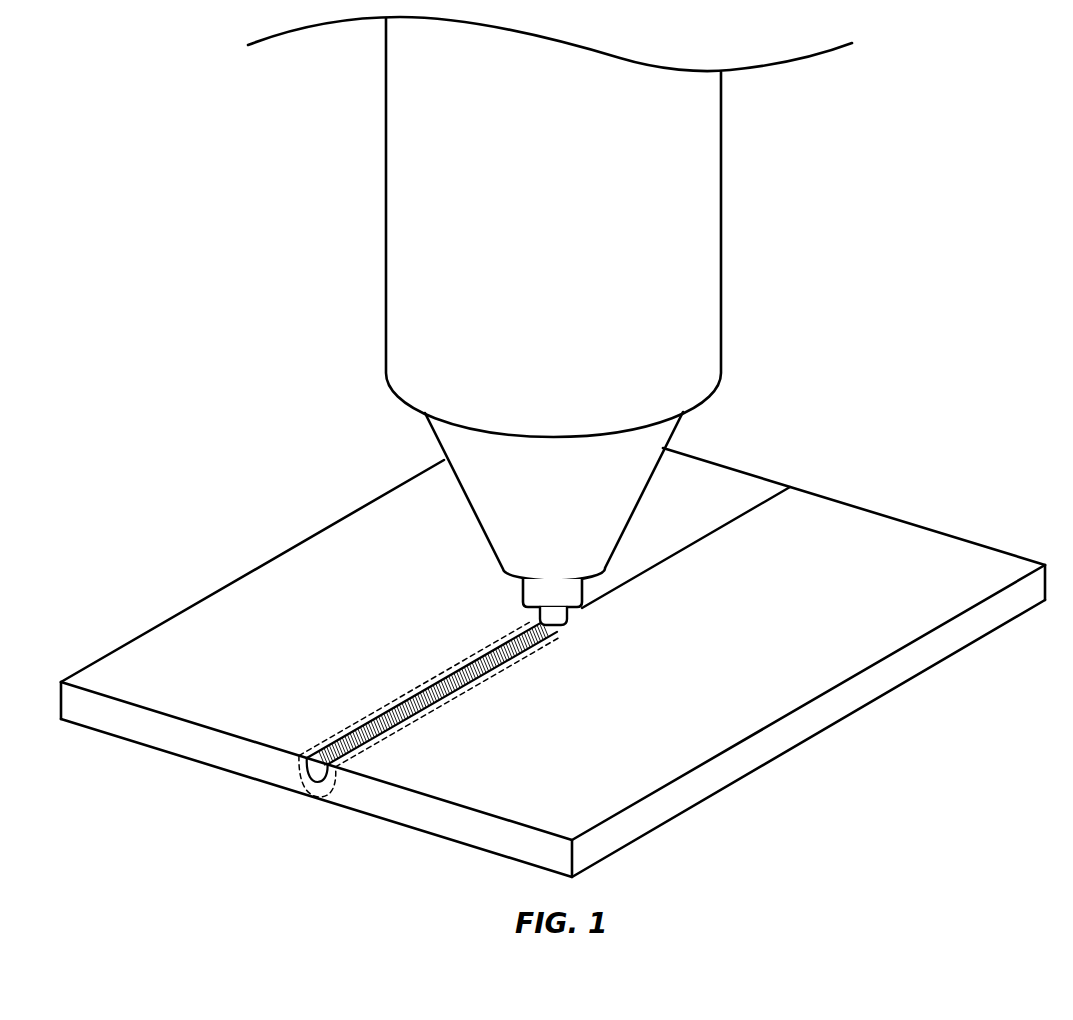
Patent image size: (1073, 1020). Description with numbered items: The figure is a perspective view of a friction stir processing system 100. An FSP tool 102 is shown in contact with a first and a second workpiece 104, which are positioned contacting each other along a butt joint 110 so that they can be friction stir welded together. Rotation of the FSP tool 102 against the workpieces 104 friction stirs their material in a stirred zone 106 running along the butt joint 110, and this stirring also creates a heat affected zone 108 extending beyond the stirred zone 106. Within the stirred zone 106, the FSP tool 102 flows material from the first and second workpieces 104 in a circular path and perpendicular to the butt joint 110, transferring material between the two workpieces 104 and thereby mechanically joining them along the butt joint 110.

The friction stir processing (FSP) system 100 is at (573, 406).
The FSP tool 102 is at (569, 617).
The workpiece 104 is at (578, 767).
The stirred zone 106 is at (356, 750).
The heat affected zone 108 is at (328, 744).
The butt joint 110 is at (774, 487).